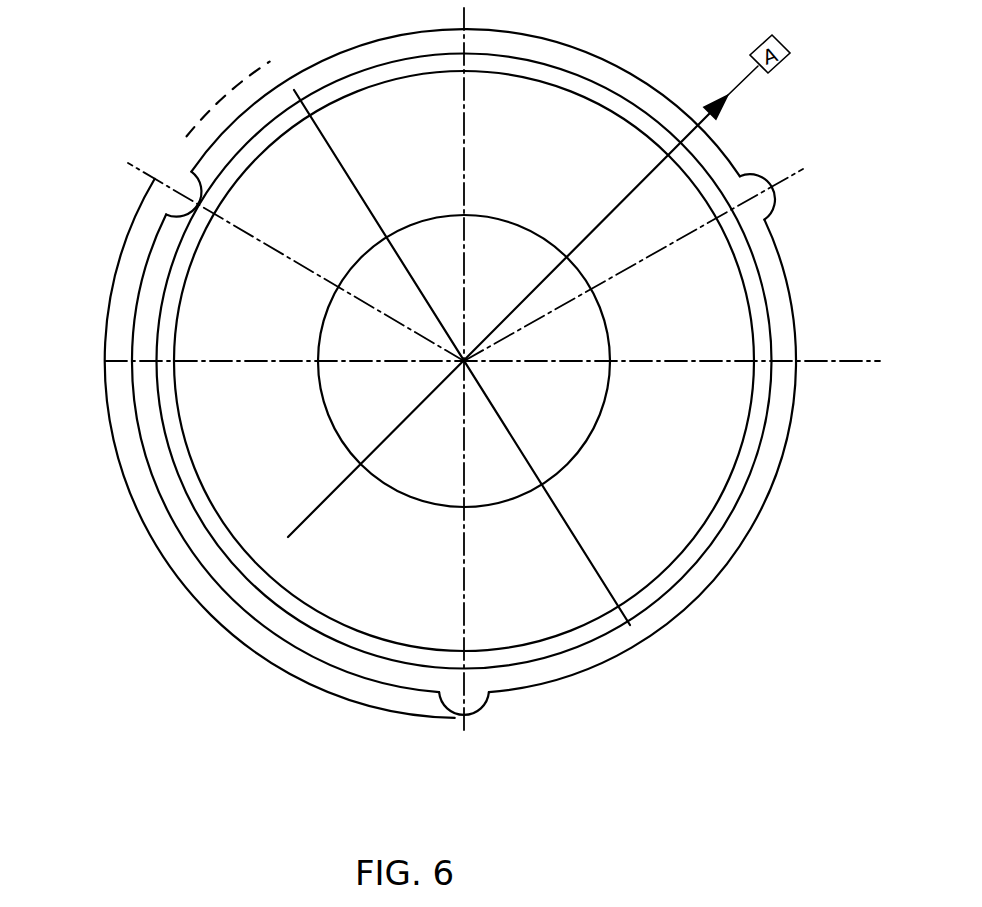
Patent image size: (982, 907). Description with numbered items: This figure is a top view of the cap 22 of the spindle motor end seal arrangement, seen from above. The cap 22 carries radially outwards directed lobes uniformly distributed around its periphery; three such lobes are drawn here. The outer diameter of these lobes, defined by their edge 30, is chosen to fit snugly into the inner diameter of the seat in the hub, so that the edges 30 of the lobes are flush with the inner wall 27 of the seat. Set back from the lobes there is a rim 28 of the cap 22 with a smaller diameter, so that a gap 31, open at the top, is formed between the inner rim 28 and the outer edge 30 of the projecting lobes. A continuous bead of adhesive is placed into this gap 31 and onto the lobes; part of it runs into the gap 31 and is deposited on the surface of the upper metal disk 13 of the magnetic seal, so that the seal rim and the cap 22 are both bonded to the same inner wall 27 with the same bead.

The upper metal disk 13 is at (273, 643).
The cap 22 is at (548, 585).
The inner wall 27 is at (242, 448).
The rim 28 is at (777, 478).
The edge 30 is at (153, 187).
The gap 31 is at (183, 565).